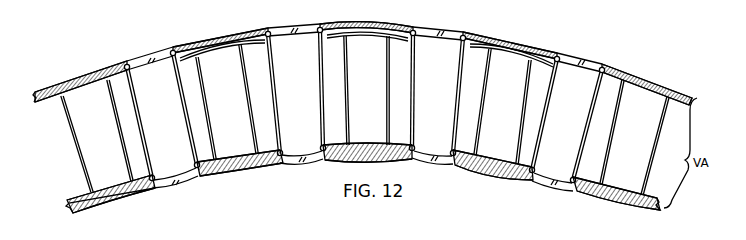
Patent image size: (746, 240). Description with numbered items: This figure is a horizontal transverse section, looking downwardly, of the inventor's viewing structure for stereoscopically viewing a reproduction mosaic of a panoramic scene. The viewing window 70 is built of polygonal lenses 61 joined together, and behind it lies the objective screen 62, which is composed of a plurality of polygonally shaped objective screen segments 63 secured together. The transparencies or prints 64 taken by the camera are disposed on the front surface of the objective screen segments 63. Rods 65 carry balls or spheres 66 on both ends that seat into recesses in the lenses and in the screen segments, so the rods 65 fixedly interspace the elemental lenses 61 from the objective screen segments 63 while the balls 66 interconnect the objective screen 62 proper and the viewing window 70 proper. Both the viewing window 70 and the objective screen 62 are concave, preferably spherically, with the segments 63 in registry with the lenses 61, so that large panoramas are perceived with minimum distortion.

The polygonal lenses 61 is at (432, 165).
The objective screen 62 is at (415, 31).
The objective screen segments 63 is at (486, 38).
The transparencies or prints 64 is at (231, 49).
The rods 65 is at (278, 92).
The balls or spheres 66 is at (270, 32).
The viewing window 70 is at (637, 213).